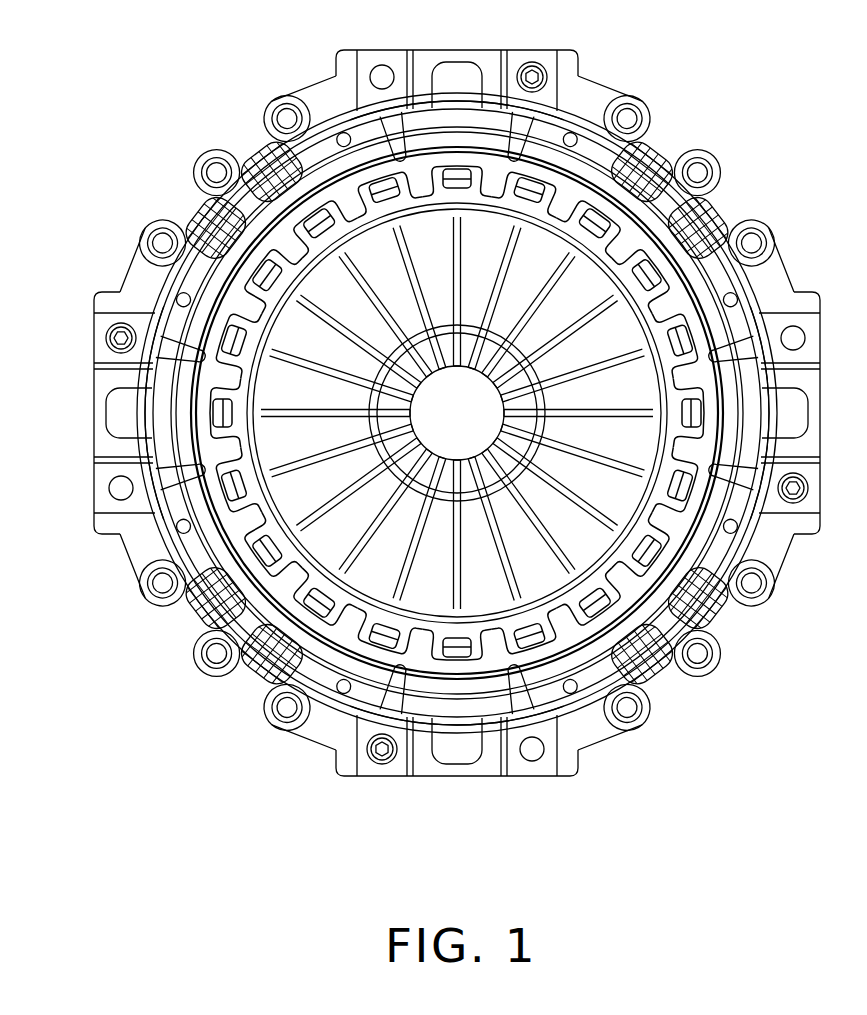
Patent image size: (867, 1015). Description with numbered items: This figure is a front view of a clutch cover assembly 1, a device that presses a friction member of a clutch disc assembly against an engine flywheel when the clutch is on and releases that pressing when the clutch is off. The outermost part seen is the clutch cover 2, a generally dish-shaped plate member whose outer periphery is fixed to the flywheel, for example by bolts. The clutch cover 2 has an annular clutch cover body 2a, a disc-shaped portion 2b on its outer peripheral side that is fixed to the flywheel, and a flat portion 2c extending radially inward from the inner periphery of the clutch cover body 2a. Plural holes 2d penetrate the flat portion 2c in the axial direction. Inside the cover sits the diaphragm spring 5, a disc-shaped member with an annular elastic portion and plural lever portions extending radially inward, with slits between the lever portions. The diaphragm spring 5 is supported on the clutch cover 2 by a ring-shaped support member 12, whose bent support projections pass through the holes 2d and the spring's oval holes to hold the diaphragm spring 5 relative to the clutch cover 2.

The clutch cover assembly 1 is at (666, 87).
The clutch cover 2 is at (133, 598).
The clutch cover body 2a is at (197, 550).
The disc-shaped portion 2b is at (107, 470).
The flat portion 2c is at (250, 683).
The holes 2d is at (333, 667).
The diaphragm spring 5 is at (305, 348).
The support member 12 is at (192, 172).